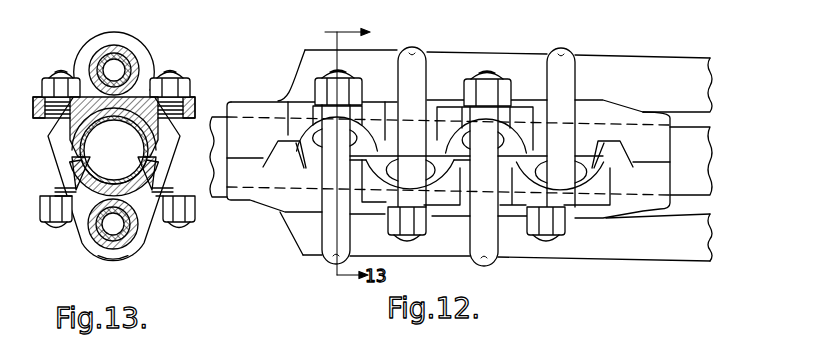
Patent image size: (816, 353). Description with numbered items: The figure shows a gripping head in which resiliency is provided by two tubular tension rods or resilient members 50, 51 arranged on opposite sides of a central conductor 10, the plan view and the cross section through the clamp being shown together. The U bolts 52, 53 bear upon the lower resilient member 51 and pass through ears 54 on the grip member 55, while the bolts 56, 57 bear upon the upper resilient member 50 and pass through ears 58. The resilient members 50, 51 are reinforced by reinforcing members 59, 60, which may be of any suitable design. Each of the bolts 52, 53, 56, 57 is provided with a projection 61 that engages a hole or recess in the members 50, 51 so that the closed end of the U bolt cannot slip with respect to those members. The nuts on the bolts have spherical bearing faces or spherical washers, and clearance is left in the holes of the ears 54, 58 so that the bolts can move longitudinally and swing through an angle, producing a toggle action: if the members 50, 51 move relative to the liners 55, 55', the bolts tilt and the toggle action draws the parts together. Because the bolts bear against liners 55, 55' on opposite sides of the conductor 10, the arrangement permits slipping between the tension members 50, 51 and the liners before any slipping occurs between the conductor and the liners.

In FIG. 12, the pipe 10 is at (223, 175).
In FIG. 13, the pipe 10 is at (78, 147).
In FIG. 12, the tubular tension rod 50 is at (681, 63).
In FIG. 13, the tubular tension rod 50 is at (133, 57).
In FIG. 12, the tubular tension rod 51 is at (692, 258).
In FIG. 13, the tubular tension rod 51 is at (93, 235).
In FIG. 12, the U bolt 52 is at (327, 234).
In FIG. 13, the U bolt 52 is at (58, 160).
In FIG. 12, the U bolt 53 is at (477, 235).
In FIG. 12, the ear 54 is at (297, 151).
In FIG. 13, the grip member 55 is at (102, 97).
In FIG. 13, the liner 55' is at (102, 192).
In FIG. 12, the bolt 56 is at (408, 64).
In FIG. 12, the bolt 57 is at (556, 72).
In FIG. 12, the ear 58 is at (448, 198).
In FIG. 13, the reinforcing member 59 is at (98, 57).
In FIG. 13, the reinforcing member 60 is at (132, 238).
In FIG. 12, the projection 61 is at (420, 53).
In FIG. 13, the projection 61 is at (108, 247).